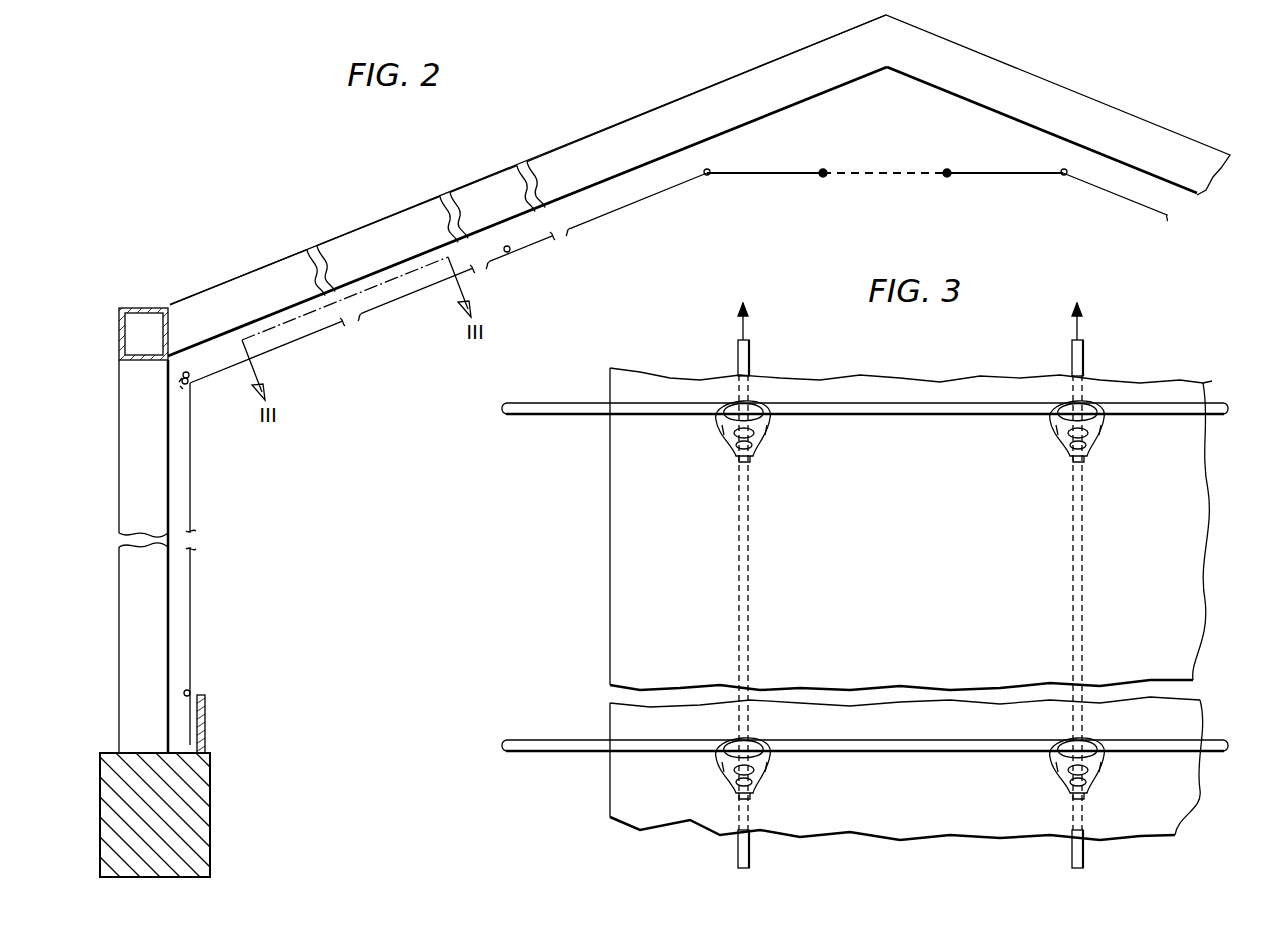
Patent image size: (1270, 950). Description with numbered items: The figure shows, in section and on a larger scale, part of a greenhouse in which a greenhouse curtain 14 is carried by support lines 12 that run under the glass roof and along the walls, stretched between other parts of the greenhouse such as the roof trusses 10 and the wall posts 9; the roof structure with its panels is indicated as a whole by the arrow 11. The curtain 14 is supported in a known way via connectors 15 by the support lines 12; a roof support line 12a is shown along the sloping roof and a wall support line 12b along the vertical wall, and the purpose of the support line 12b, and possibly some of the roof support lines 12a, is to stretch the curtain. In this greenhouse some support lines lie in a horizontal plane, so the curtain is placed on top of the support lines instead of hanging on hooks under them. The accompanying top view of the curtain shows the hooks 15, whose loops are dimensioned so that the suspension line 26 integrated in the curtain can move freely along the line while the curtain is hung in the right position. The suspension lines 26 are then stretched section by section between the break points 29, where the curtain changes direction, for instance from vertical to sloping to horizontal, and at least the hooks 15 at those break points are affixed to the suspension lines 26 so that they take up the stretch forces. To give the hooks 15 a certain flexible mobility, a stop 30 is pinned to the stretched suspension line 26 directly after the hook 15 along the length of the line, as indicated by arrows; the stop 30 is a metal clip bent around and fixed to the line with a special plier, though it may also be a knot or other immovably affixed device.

In FIG. 2, the wall post 9 is at (148, 608).
In FIG. 2, the roof truss 10 is at (1062, 96).
In FIG. 2, the roof panel assembly 11 is at (392, 205).
In FIG. 2, the support line 12 is at (947, 178).
In FIG. 3, the support line 12 is at (537, 416).
In FIG. 2, the roof support line 12a is at (186, 366).
In FIG. 2, the wall support line 12b is at (208, 697).
In FIG. 2, the greenhouse curtain 14 is at (190, 492).
In FIG. 3, the greenhouse curtain 14 is at (620, 554).
In FIG. 2, the connector 15 is at (520, 255).
In FIG. 3, the connector 15 is at (732, 440).
In FIG. 3, the suspension line 26 is at (750, 572).
In FIG. 2, the break point 29 is at (712, 178).
In FIG. 3, the stop 30 is at (754, 466).